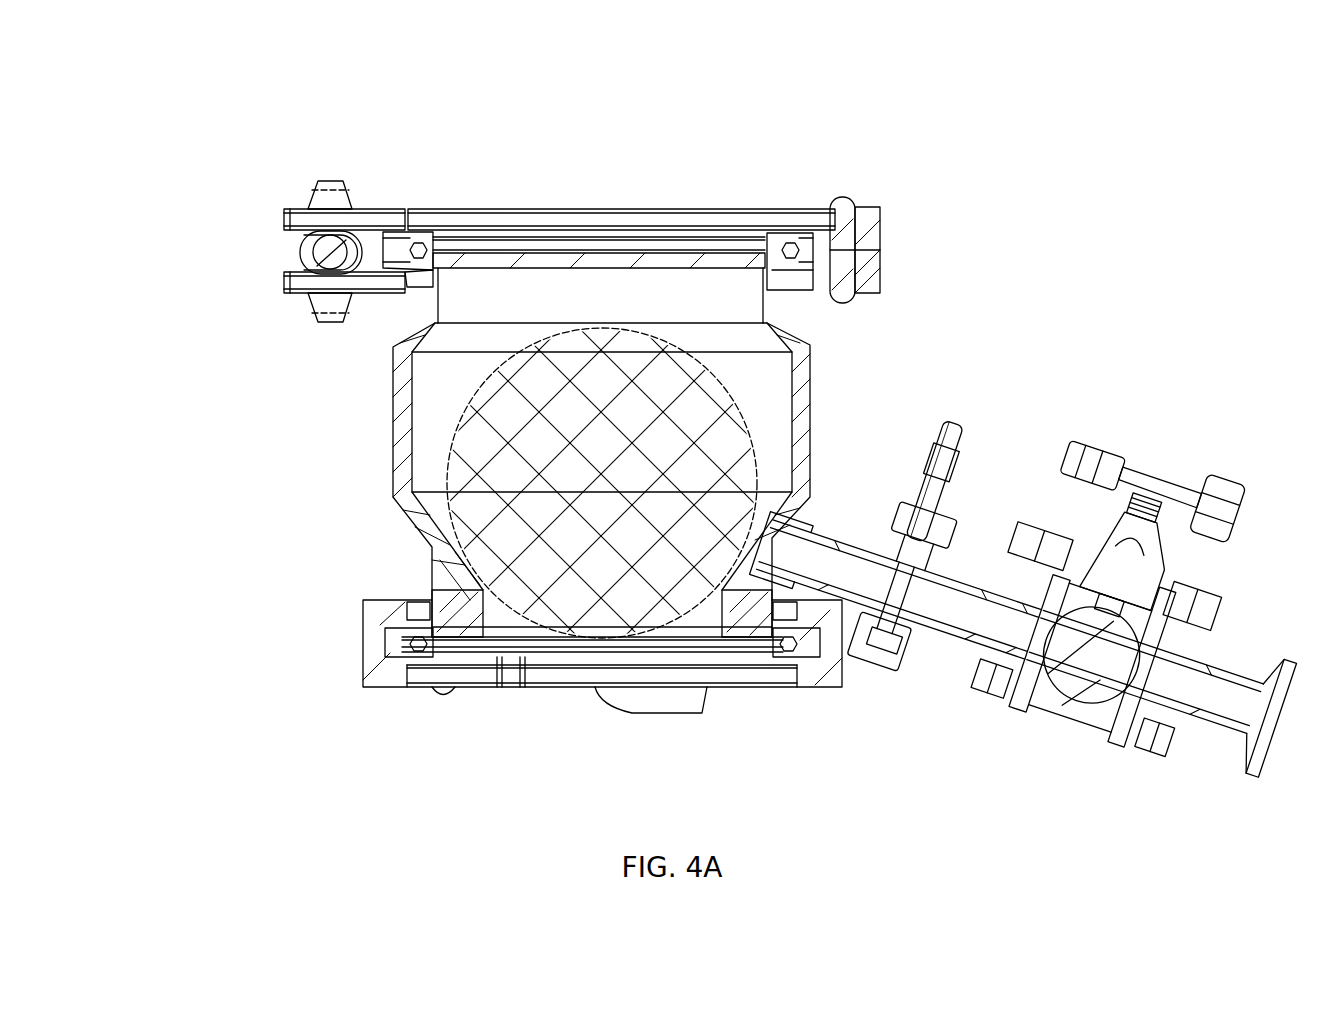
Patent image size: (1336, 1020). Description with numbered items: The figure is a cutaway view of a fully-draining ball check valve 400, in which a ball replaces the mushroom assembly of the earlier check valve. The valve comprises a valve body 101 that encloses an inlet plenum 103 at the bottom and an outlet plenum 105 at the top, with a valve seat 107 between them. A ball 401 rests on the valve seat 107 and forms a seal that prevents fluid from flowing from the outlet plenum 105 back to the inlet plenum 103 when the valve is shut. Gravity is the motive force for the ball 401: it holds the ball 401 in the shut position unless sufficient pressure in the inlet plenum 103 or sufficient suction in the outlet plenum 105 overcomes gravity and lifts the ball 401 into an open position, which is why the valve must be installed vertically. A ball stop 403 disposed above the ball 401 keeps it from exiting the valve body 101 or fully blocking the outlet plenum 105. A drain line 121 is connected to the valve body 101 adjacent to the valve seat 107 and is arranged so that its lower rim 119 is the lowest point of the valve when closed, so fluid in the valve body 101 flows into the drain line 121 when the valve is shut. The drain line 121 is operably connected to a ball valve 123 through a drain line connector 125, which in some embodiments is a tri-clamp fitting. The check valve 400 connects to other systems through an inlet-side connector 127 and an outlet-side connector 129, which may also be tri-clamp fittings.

The fully-draining ball check valve 400 is at (688, 453).
The valve body 101 is at (393, 428).
The inlet plenum 103 is at (493, 627).
The outlet plenum 105 is at (497, 293).
The valve seat 107 is at (457, 574).
The lower rim 119 is at (766, 536).
The drain line 121 is at (838, 531).
The ball valve 123 is at (1067, 745).
The drain line connector 125 is at (882, 695).
The inlet-side connector 127 is at (350, 643).
The outlet-side connector 129 is at (270, 254).
The ball 401 is at (725, 383).
The ball stop 403 is at (727, 258).